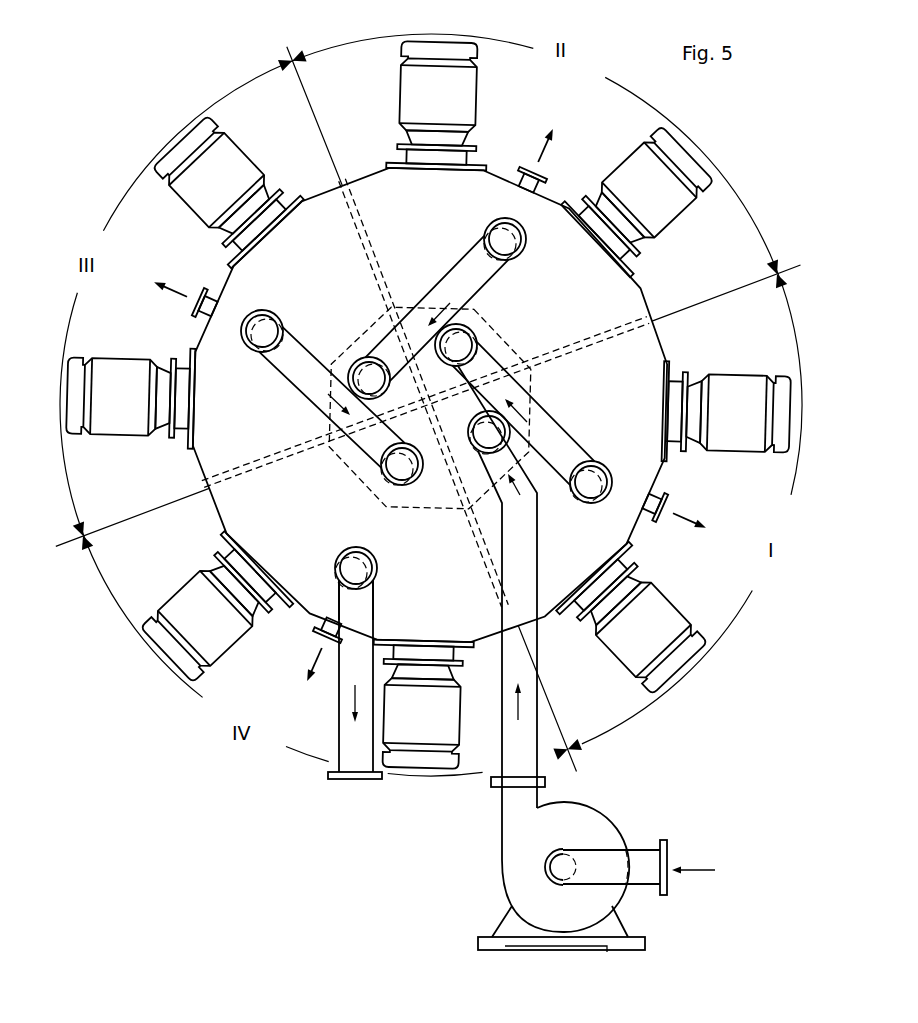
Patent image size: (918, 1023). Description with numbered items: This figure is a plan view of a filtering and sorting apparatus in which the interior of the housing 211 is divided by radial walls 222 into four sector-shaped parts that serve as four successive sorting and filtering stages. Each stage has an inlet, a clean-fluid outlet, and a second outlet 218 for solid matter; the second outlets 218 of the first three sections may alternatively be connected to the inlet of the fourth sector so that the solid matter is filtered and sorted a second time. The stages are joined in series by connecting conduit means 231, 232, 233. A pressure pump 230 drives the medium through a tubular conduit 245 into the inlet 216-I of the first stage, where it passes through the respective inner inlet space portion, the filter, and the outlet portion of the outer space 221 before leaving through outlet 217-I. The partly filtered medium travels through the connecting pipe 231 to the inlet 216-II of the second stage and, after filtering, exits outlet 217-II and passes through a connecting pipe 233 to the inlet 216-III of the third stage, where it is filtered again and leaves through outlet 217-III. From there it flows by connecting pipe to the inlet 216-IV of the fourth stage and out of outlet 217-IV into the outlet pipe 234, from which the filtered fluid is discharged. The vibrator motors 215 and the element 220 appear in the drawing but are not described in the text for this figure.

The housing 211 is at (646, 287).
The vibrator motor 215 is at (463, 90).
The second outlets 218 is at (542, 184).
The pipe elbow 220 is at (381, 587).
The outer space 221 is at (196, 463).
The radial walls 222 is at (352, 215).
The pressure pump 230 is at (597, 828).
The connecting pipe 231 is at (550, 420).
The connecting conduit means 232 is at (440, 290).
The connecting pipe 233 is at (316, 406).
The outlet pipe 234 is at (343, 709).
The tubular conduit 245 is at (532, 637).
The inlet of stage I 216-I is at (480, 470).
The inlet of the second stage 216-II is at (477, 340).
The inlet of the third stage 216-III is at (360, 356).
The inlet of the fourth stage 216-IV is at (389, 478).
The outlet of stage I 217-I is at (580, 501).
The outlet of the second stage 217-II is at (523, 252).
The outlet of the third stage 217-III is at (275, 317).
The outlet of the fourth stage 217-IV is at (335, 572).